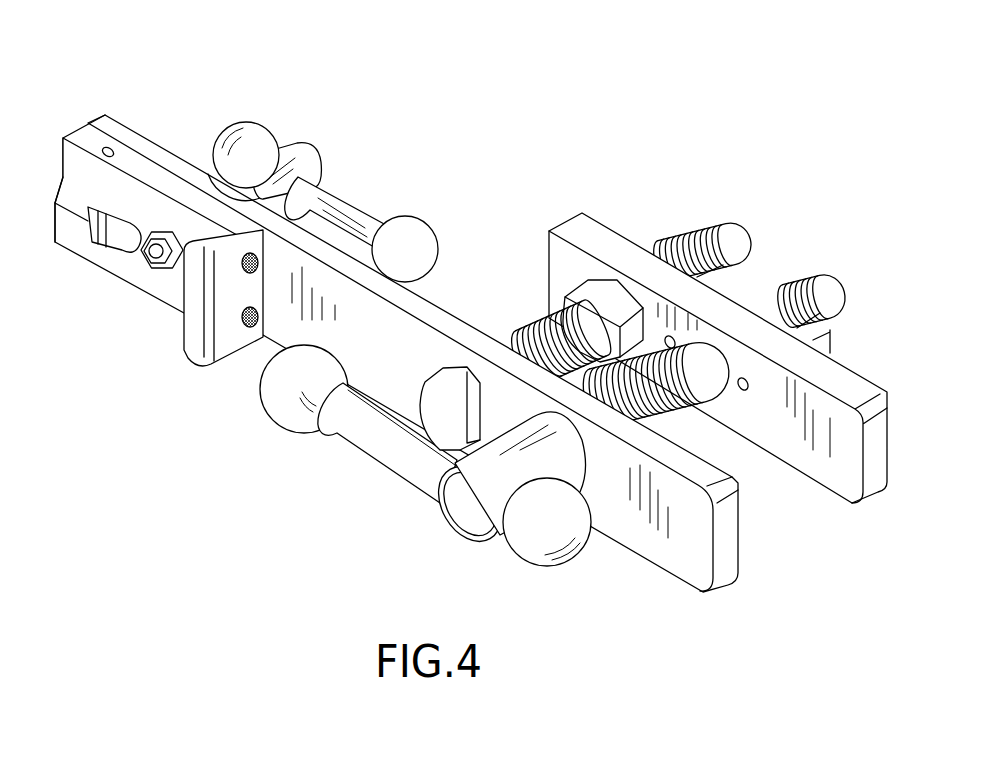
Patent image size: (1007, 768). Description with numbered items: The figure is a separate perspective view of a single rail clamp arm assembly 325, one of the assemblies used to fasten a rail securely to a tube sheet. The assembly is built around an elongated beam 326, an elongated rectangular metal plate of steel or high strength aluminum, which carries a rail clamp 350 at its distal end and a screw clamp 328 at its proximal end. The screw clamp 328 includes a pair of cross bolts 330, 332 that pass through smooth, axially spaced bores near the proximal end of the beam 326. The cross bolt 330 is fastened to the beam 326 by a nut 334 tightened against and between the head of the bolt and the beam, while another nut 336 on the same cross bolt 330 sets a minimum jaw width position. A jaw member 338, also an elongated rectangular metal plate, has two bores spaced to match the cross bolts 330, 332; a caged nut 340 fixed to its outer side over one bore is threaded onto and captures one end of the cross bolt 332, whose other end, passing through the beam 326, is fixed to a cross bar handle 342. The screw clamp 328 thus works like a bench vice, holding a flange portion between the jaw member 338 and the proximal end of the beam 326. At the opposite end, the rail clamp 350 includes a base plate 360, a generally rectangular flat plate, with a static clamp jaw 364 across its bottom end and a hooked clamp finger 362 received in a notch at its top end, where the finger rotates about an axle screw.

The rail clamp arm assembly 325 is at (763, 204).
The elongated beam 326 is at (443, 305).
The screw clamp 328 is at (855, 347).
The cross bolt 330 is at (703, 233).
The cross bolt 332 is at (835, 280).
The nut 334 is at (500, 337).
The nut 336 is at (613, 297).
The jaw member 338 is at (817, 487).
The caged nut 340 is at (772, 279).
The cross bar handle 342 is at (378, 445).
The rail clamp 350 is at (268, 104).
The base plate 360 is at (152, 178).
The hooked clamp finger 362 is at (56, 233).
The static clamp jaw 364 is at (193, 357).